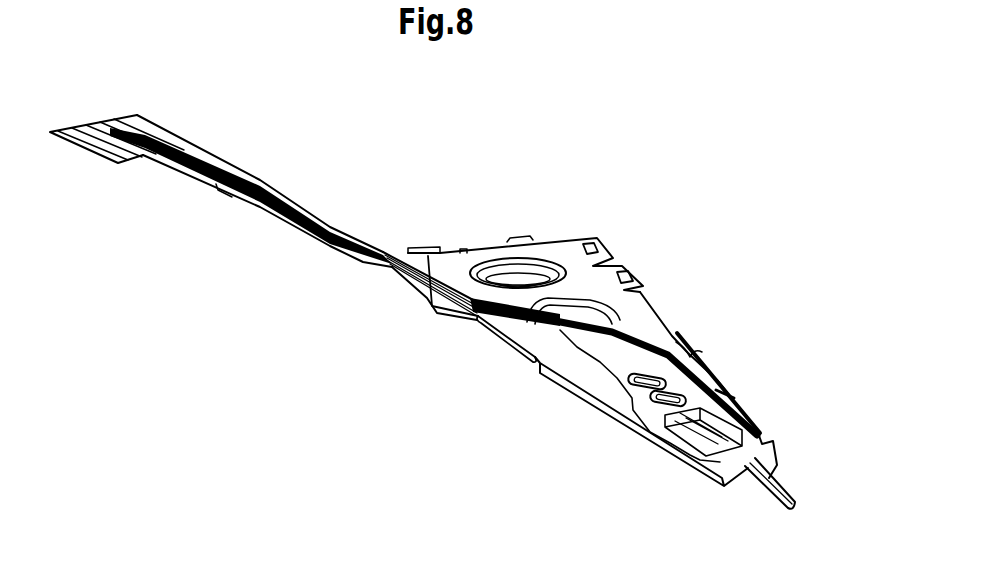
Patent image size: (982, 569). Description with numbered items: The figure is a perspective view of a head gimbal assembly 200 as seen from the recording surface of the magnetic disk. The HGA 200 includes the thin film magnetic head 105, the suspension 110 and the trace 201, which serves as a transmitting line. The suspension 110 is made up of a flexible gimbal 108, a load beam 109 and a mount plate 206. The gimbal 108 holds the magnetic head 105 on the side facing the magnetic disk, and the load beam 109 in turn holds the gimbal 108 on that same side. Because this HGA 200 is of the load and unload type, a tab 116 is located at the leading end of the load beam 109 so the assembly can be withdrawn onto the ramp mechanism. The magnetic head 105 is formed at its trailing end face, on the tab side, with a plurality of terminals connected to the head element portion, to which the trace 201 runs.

The head gimbal assembly 200 is at (445, 169).
The trace 201 is at (315, 212).
The mount plate 206 is at (545, 240).
The suspension 110 is at (736, 299).
The load beam 109 is at (688, 351).
The flexible gimbal 108 is at (721, 397).
The thin film magnetic head 105 is at (652, 440).
The tab 116 is at (789, 508).